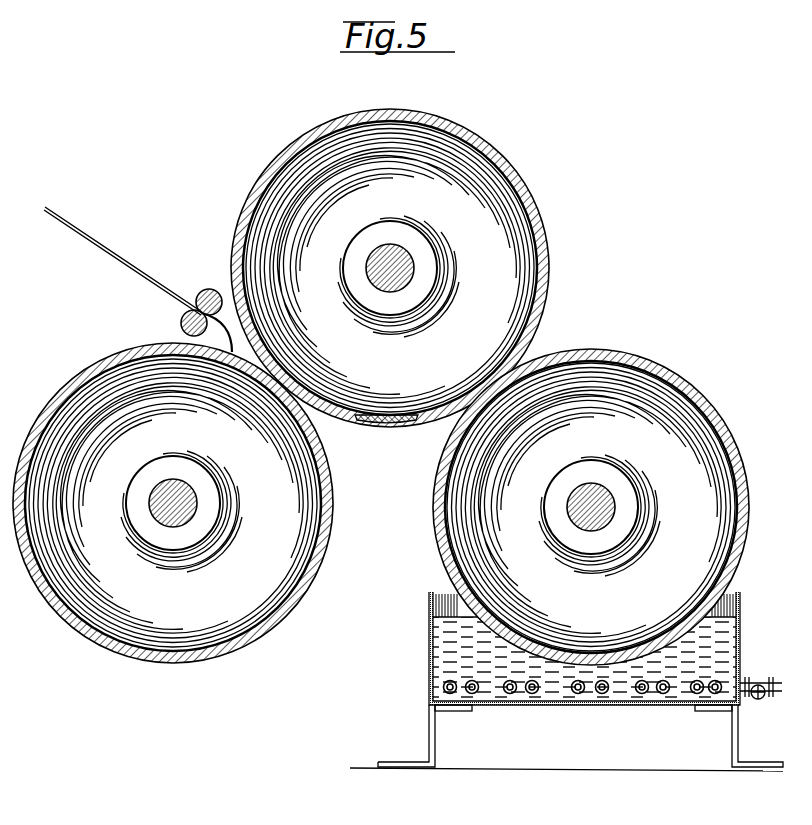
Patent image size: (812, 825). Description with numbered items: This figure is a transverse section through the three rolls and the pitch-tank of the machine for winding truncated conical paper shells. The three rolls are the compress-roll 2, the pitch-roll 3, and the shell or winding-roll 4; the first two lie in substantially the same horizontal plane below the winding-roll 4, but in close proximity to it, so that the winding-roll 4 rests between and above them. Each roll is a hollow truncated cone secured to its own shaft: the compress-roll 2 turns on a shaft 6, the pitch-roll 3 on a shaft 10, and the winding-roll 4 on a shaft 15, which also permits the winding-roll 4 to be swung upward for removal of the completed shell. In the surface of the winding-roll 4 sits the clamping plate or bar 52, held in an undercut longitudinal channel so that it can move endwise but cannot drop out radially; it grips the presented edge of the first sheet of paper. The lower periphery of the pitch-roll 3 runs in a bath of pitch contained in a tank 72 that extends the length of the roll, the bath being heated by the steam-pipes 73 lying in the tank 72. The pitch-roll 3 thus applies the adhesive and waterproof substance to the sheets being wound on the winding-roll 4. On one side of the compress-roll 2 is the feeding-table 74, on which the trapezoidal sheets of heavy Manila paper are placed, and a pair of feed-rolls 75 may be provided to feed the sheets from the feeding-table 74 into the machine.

The compress-roll 2 is at (89, 368).
The pitch-roll 3 is at (687, 383).
The shell or winding-roll 4 is at (540, 219).
The shaft 6 is at (188, 513).
The shaft 10 is at (593, 523).
The shaft 15 is at (412, 270).
The clamping plate or bar 52 is at (388, 428).
The tank 72 is at (429, 650).
The steam-pipes 73 is at (511, 693).
The feeding-table 74 is at (100, 243).
The feed-rolls 75 is at (209, 289).